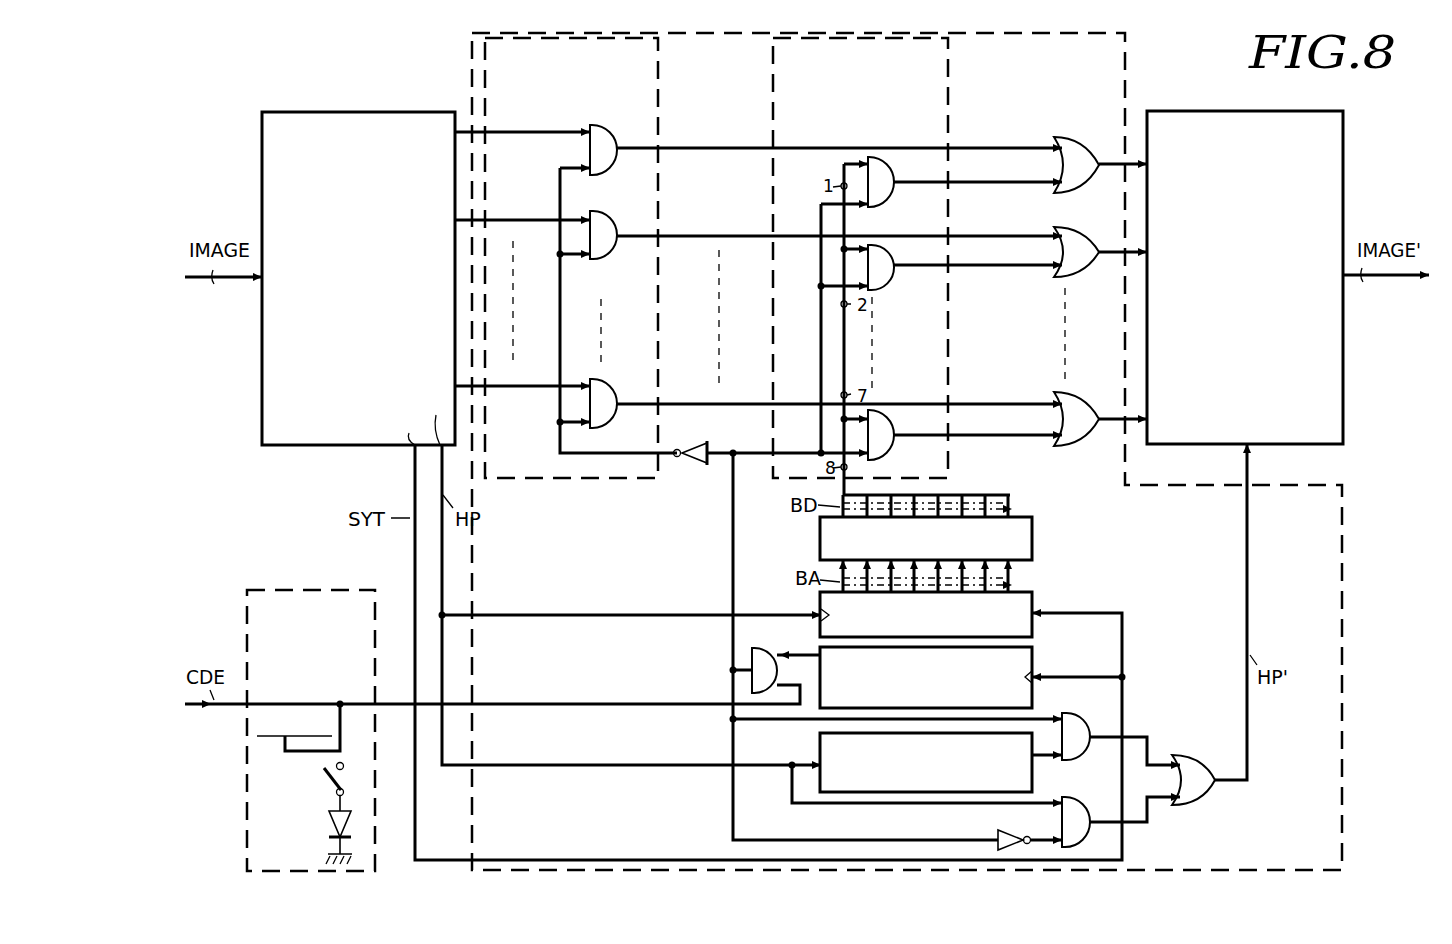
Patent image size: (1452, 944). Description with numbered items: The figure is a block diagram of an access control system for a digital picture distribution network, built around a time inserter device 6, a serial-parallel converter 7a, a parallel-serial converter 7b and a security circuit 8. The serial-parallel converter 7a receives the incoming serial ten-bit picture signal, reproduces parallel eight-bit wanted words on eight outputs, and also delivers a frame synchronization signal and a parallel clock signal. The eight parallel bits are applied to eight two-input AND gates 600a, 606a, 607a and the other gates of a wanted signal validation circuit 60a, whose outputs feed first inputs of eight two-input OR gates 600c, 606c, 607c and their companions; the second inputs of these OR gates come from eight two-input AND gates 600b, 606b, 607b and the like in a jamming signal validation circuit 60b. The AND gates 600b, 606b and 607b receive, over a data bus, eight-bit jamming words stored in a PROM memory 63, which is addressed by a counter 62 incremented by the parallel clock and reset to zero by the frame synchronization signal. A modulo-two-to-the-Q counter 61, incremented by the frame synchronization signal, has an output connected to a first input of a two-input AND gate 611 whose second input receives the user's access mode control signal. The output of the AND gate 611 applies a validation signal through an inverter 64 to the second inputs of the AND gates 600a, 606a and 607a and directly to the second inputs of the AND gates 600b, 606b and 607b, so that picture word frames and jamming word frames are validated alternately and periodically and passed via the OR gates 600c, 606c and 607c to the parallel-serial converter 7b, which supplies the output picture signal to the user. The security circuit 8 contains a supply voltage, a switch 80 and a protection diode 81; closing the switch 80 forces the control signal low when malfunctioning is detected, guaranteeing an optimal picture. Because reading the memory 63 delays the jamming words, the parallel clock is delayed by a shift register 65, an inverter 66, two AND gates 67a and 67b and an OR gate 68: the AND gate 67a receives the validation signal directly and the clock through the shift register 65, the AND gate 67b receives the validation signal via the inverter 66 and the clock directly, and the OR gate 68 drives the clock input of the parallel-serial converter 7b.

The time inserter device 6 is at (1124, 64).
The serial-parallel converter 7a is at (352, 112).
The parallel-serial converter 7b is at (1185, 112).
The security circuit 8 is at (313, 592).
The wanted signal validation circuit 60a is at (655, 123).
The jamming signal validation circuit 60b is at (946, 102).
The modulo-2^Q counter 61 is at (1033, 655).
The counter 62 is at (1030, 600).
The PROM memory 63 is at (818, 538).
The inverter 64 is at (702, 462).
The shift register 65 is at (819, 745).
The inverter 66 is at (1010, 835).
The AND gate 67a is at (1072, 722).
The AND gate 67b is at (1073, 806).
The OR gate 68 is at (1193, 764).
The switch 80 is at (322, 779).
The protection diode 81 is at (328, 826).
The AND gate 600a is at (606, 421).
The AND gate 600b is at (884, 453).
The OR gate 600c is at (1077, 440).
The AND gate 606a is at (603, 256).
The AND gate 606b is at (884, 284).
The OR gate 606c is at (1077, 270).
The AND gate 607a is at (603, 172).
The AND gate 607b is at (884, 200).
The OR gate 607c is at (1077, 186).
The AND gate 611 is at (762, 656).